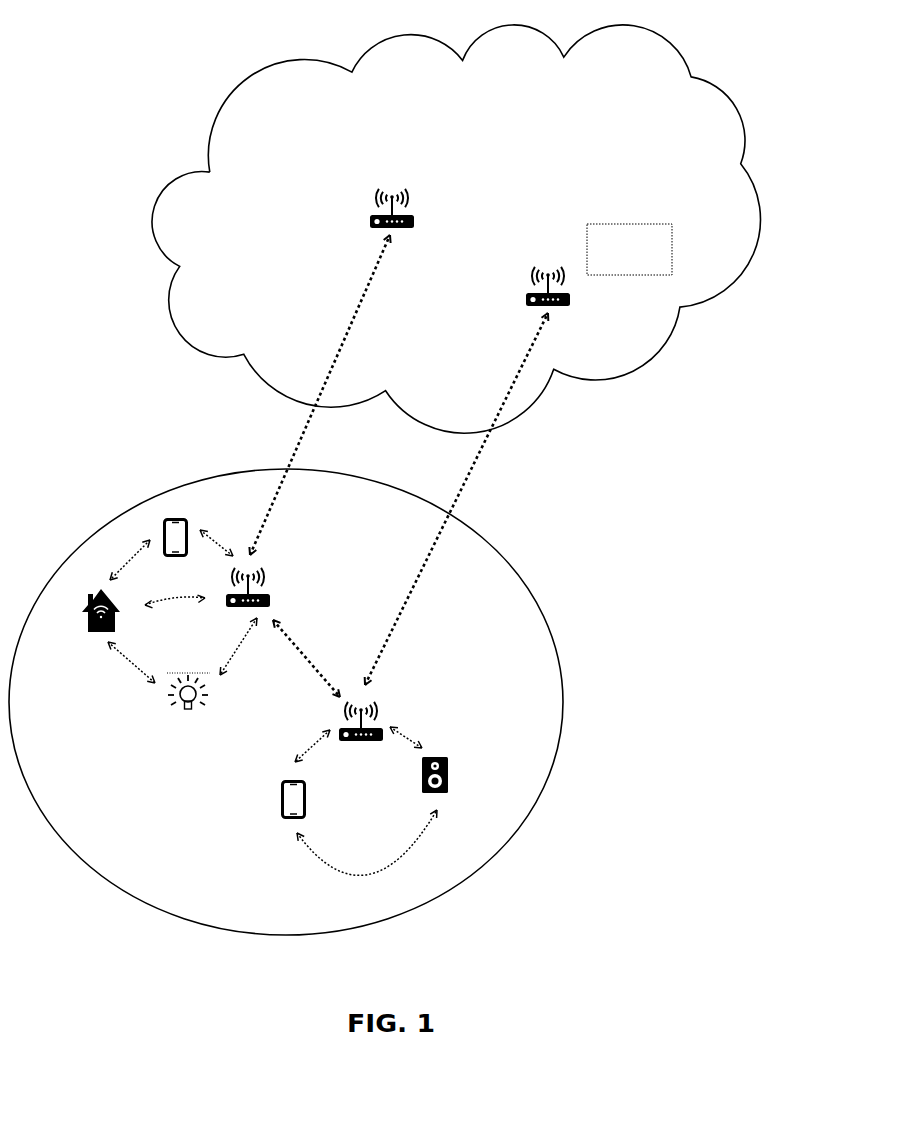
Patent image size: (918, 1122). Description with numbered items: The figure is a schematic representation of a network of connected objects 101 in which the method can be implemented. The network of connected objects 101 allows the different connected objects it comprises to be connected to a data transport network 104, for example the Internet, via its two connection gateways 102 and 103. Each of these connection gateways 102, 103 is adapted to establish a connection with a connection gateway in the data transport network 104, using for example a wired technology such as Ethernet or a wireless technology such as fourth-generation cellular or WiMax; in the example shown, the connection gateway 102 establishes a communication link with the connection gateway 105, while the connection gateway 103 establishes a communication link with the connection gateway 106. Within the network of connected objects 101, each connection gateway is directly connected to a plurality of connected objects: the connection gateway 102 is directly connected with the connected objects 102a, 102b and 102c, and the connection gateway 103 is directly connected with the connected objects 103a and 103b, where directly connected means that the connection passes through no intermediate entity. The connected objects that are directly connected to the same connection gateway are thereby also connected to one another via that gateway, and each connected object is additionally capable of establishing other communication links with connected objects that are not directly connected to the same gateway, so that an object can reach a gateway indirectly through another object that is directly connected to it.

The network of connected objects 101 is at (562, 702).
The connection gateway 102 is at (265, 577).
The connected object 102a is at (175, 518).
The connected object 102b is at (93, 633).
The connected object 102c is at (177, 717).
The connection gateway 103 is at (380, 706).
The connected object 103a is at (280, 806).
The connected object 103b is at (449, 776).
The data transport network 104 is at (758, 218).
The connection gateway 105 is at (408, 197).
The connection gateway 106 is at (566, 272).